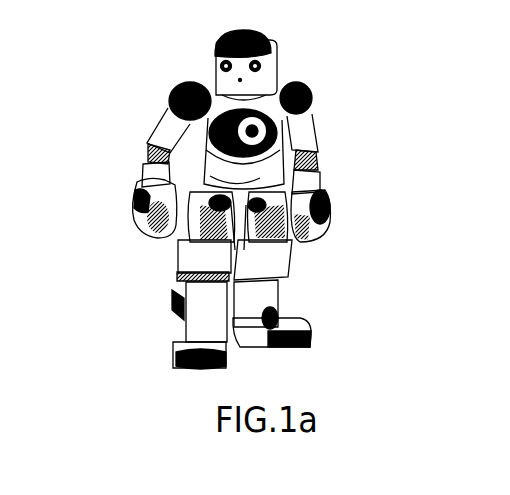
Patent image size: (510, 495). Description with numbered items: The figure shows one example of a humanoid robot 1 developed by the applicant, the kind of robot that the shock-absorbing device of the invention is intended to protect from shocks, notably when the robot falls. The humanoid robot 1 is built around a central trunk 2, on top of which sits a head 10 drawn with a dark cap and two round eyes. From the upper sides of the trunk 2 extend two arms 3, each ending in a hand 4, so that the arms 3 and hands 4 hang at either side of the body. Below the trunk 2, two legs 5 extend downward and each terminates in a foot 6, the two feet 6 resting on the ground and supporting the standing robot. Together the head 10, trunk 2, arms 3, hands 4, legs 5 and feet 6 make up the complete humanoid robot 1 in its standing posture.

The humanoid robot 1 is at (153, 32).
The head 10 is at (282, 52).
The trunk 2 is at (290, 132).
The arms 3 is at (325, 170).
The hands 4 is at (327, 205).
The legs 5 is at (297, 253).
The feet 6 is at (303, 327).